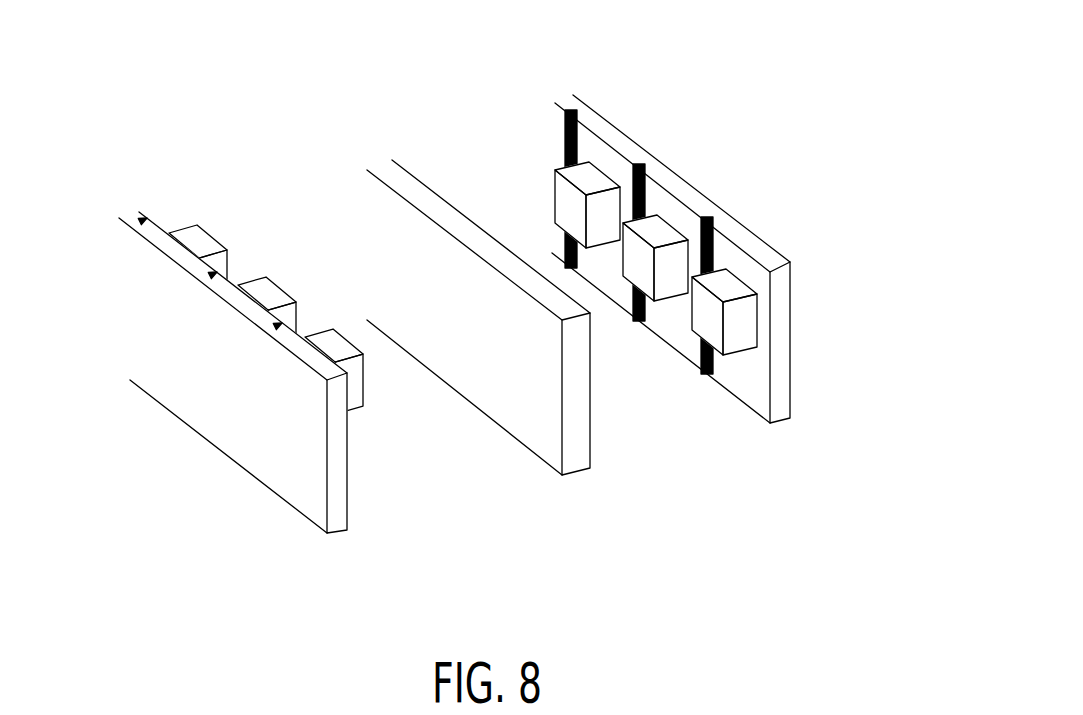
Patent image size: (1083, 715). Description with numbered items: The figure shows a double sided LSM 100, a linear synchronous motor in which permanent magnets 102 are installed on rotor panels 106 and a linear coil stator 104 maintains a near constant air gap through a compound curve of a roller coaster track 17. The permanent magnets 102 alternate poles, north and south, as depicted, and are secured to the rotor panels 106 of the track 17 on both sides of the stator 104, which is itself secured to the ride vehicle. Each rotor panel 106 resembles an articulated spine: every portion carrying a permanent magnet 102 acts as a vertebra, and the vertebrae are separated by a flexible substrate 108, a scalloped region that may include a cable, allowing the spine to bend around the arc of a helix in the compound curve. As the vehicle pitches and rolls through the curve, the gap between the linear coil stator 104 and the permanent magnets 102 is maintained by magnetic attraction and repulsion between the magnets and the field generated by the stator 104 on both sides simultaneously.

The double sided LSM 100 is at (481, 323).
The permanent magnets 102 is at (350, 340).
The linear coil stator 104 is at (583, 437).
The rotor panels 106 is at (213, 408).
The flexible substrate 108 is at (268, 330).
The roller coaster track 17 is at (504, 363).